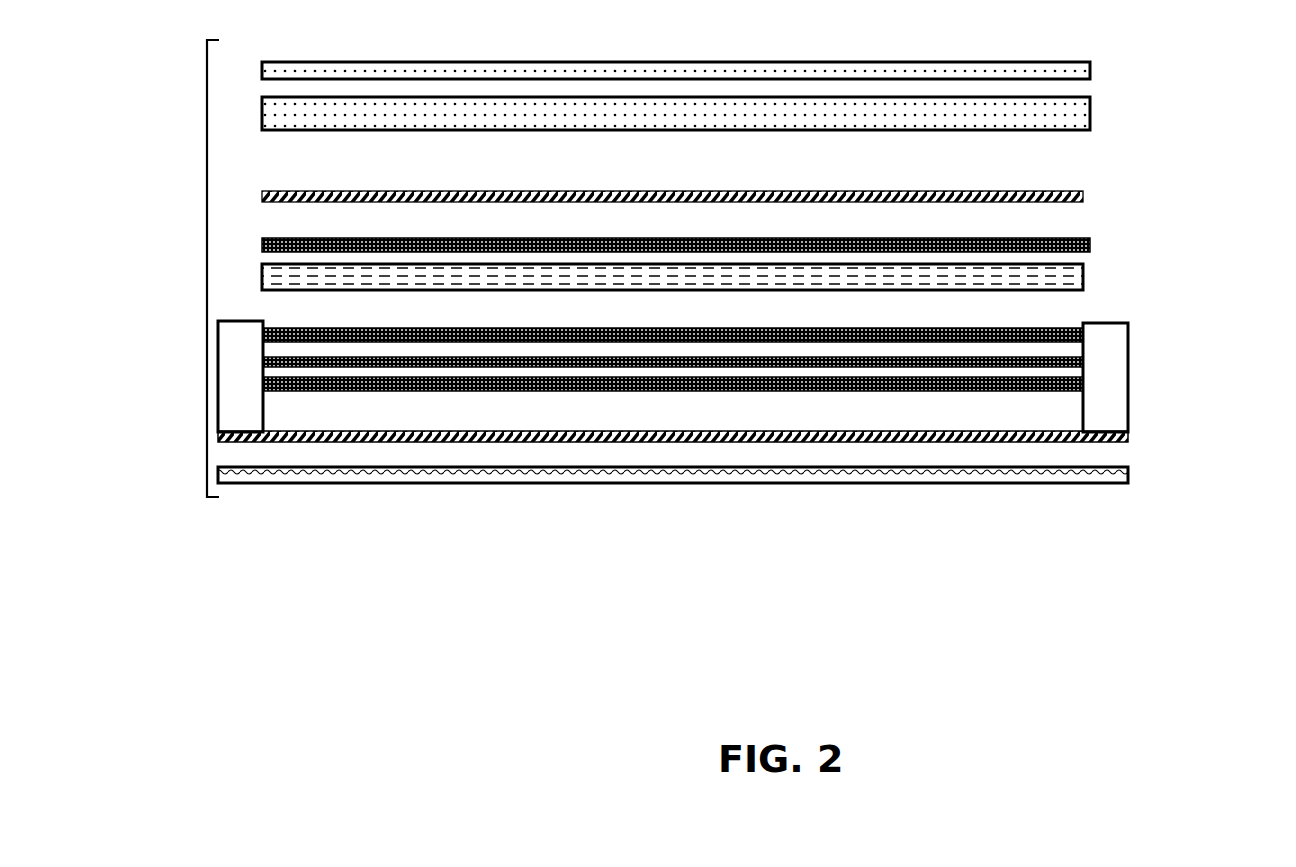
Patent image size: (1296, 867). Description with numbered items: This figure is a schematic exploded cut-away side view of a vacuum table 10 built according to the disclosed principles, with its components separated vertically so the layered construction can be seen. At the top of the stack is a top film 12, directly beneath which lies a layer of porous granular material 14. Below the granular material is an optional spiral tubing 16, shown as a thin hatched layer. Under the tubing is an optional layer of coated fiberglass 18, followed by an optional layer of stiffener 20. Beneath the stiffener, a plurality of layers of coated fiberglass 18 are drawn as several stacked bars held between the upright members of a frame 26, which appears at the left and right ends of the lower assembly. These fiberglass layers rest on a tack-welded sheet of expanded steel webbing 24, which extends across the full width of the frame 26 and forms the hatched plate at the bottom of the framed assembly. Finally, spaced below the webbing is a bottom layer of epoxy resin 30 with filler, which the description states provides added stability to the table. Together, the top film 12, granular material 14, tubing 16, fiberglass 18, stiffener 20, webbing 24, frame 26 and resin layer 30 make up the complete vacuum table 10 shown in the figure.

The vacuum table 10 is at (207, 268).
The top film 12 is at (1092, 62).
The layer of porous granular material 14 is at (1092, 113).
The spiral tubing 16 is at (1085, 192).
The layer of coated fiberglass 18 is at (1091, 240).
The layer of stiffener 20 is at (1085, 278).
The tack-welded sheet of expanded steel webbing 24 is at (840, 438).
The frame 26 is at (1130, 352).
The bottom layer of epoxy resin 30 is at (1002, 482).